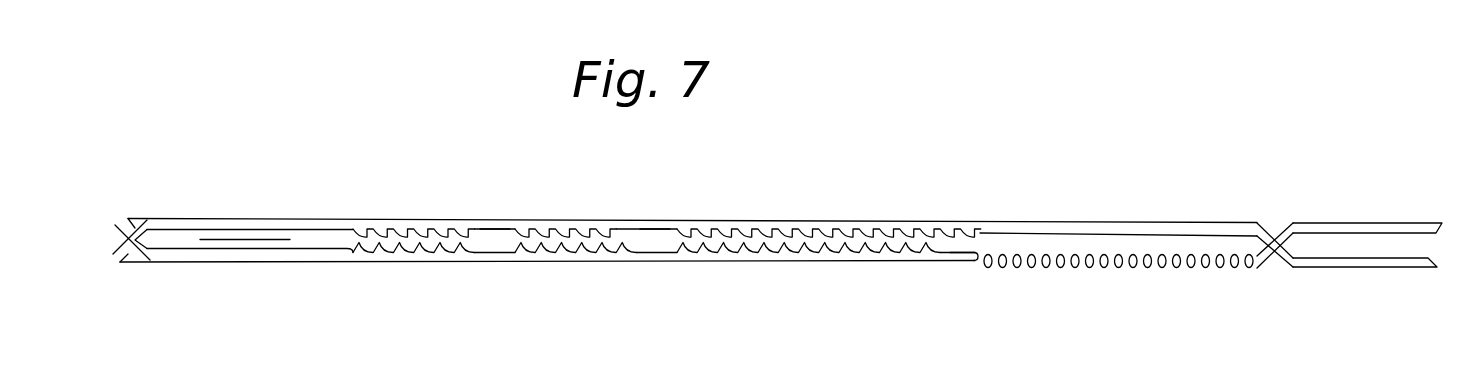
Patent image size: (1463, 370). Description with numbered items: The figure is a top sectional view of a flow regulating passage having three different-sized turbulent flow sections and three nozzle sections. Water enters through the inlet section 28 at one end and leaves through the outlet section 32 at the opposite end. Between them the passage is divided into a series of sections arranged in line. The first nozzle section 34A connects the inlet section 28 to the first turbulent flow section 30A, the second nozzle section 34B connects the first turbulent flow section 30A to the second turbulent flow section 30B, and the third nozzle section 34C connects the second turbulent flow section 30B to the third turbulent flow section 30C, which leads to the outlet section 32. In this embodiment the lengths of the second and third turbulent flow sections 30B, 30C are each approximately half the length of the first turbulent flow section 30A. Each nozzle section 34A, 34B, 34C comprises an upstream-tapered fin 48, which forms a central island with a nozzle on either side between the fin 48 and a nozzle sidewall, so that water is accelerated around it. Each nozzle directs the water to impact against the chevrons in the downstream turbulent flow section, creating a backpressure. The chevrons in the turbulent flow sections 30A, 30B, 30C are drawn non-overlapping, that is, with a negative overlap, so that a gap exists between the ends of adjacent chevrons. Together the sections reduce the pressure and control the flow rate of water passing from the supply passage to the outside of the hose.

The outlet section 32 is at (352, 287).
The third turbulent flow section 30C is at (465, 287).
The third nozzle section 34C is at (520, 287).
The second turbulent flow section 30B is at (625, 287).
The second nozzle section 34B is at (675, 287).
The first turbulent flow section 30A is at (920, 287).
The first nozzle section 34A is at (990, 287).
The inlet section 28 is at (1245, 287).
The upstream-tapered fin 48 is at (488, 236).